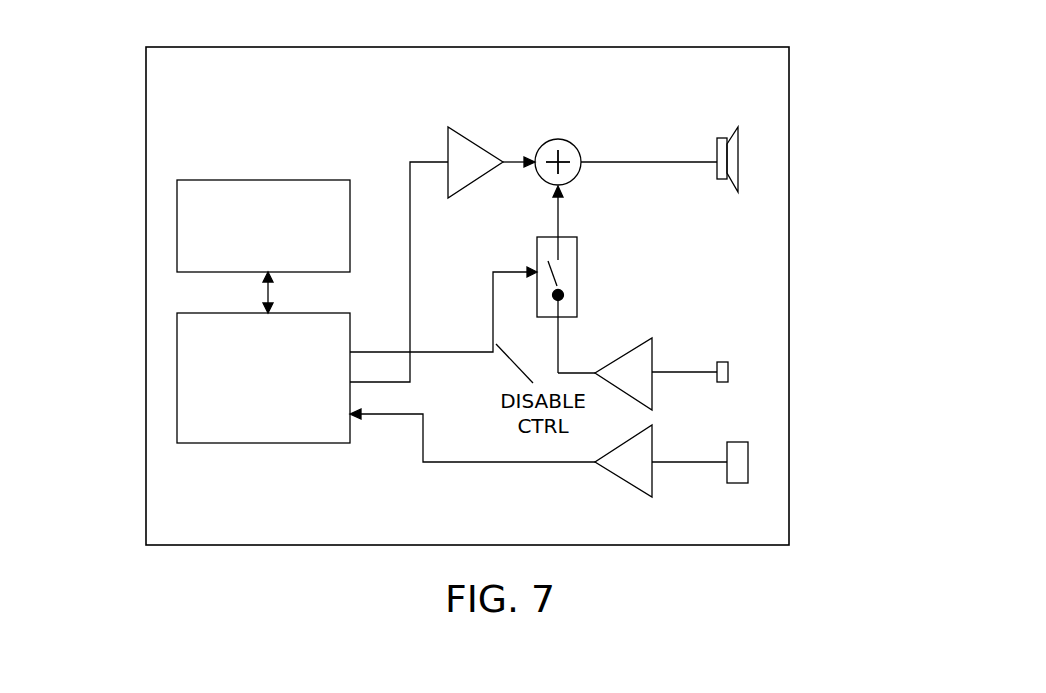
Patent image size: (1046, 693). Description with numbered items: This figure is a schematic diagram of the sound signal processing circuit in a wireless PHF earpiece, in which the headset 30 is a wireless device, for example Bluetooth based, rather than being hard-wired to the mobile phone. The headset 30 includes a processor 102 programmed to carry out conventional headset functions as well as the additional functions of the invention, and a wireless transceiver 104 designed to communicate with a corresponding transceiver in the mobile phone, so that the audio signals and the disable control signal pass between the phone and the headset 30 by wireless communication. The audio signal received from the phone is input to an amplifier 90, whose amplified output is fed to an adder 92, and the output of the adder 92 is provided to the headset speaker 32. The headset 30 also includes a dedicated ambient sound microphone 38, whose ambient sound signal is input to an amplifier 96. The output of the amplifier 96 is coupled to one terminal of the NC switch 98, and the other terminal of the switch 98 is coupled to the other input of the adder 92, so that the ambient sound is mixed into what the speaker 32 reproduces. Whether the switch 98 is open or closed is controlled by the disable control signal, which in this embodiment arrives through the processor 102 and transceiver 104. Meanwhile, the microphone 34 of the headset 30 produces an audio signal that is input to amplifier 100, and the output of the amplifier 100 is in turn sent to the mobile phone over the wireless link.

The headset 30 is at (414, 296).
The headset speaker 32 is at (775, 128).
The microphone 34 is at (771, 462).
The ambient sound microphone 38 is at (761, 345).
The amplifier 90 is at (501, 149).
The adder 92 is at (626, 143).
The amplifier 96 is at (654, 381).
The NC switch 98 is at (609, 279).
The amplifier 100 is at (623, 475).
The processor 102 is at (263, 407).
The wireless transceiver 104 is at (263, 201).